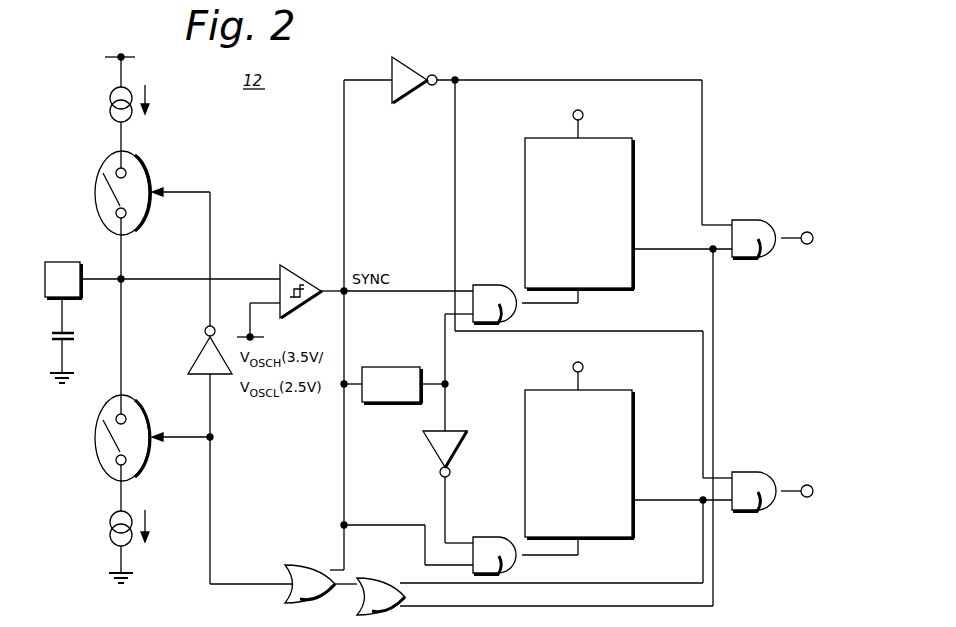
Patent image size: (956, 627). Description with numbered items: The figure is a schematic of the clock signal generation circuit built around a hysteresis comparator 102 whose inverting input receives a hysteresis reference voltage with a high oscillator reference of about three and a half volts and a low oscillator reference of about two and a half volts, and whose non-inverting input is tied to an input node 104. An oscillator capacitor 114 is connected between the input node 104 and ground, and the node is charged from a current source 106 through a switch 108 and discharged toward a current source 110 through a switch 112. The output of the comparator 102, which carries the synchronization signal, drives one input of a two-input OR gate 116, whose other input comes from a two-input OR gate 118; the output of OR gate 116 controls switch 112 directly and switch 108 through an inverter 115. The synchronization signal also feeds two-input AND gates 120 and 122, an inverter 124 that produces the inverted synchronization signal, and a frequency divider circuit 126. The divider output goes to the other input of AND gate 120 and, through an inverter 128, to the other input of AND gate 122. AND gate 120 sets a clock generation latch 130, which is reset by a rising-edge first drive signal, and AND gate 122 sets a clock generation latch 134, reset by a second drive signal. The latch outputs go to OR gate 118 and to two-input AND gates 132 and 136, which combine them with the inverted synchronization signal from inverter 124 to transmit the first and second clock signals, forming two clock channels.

The hysteresis comparator 102 is at (293, 265).
The input node 104 is at (61, 262).
The current source 106 is at (110, 101).
The switch 108 is at (146, 165).
The current source 110 is at (110, 522).
The switch 112 is at (147, 460).
The oscillator capacitor 114 is at (73, 334).
The inverter 115 is at (192, 360).
The two-input OR gate 116 is at (310, 565).
The two-input OR gate 118 is at (386, 578).
The two-input AND gate 120 is at (488, 285).
The two-input AND gate 122 is at (488, 537).
The inverter 124 is at (411, 100).
The frequency divider circuit 126 is at (389, 367).
The inverter 128 is at (424, 447).
The clock generation latch 130 is at (635, 191).
The two-input AND gate 132 is at (745, 220).
The clock generation latch 134 is at (635, 443).
The two-input AND gate 136 is at (745, 472).